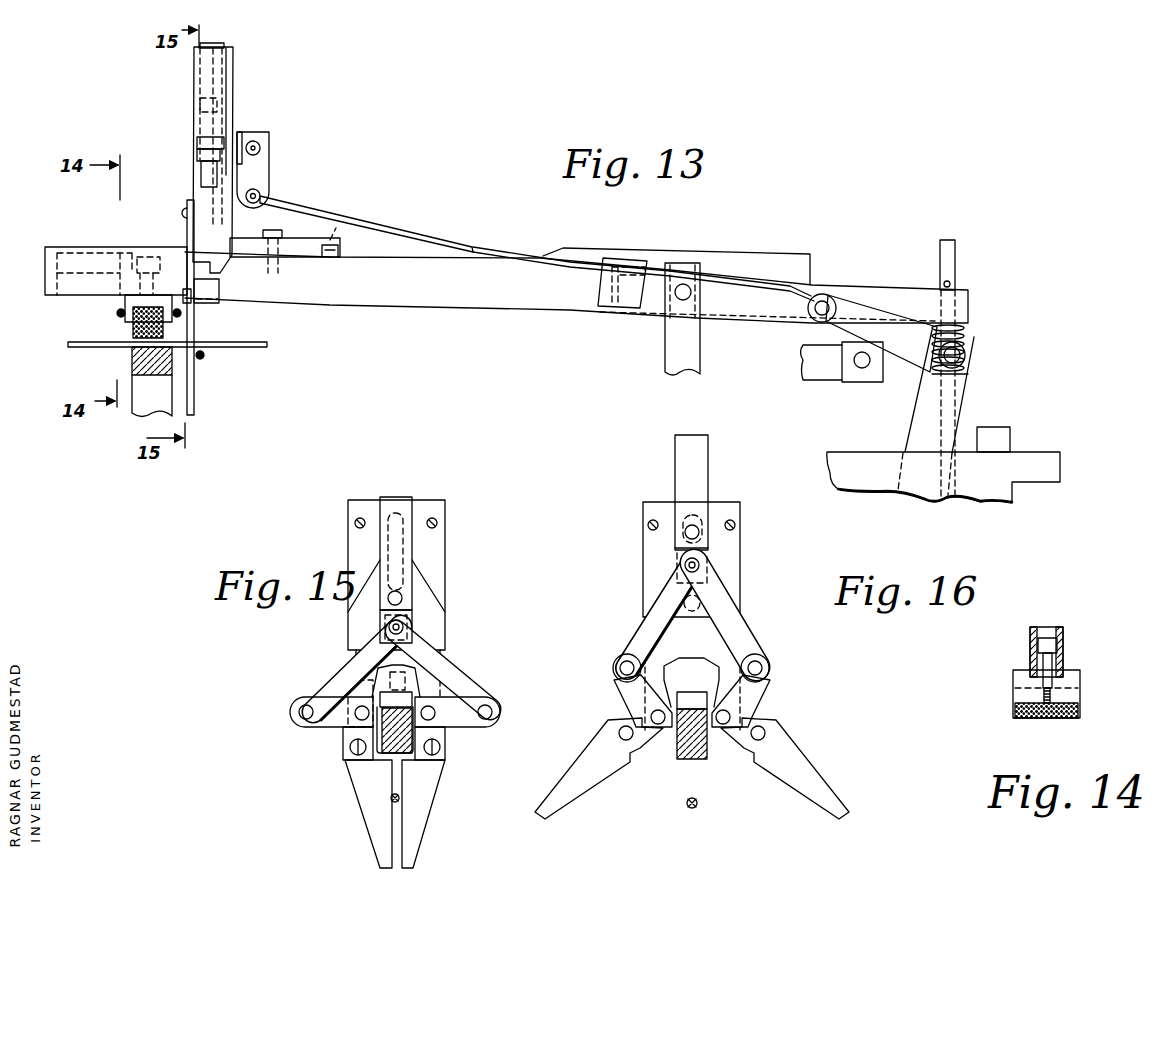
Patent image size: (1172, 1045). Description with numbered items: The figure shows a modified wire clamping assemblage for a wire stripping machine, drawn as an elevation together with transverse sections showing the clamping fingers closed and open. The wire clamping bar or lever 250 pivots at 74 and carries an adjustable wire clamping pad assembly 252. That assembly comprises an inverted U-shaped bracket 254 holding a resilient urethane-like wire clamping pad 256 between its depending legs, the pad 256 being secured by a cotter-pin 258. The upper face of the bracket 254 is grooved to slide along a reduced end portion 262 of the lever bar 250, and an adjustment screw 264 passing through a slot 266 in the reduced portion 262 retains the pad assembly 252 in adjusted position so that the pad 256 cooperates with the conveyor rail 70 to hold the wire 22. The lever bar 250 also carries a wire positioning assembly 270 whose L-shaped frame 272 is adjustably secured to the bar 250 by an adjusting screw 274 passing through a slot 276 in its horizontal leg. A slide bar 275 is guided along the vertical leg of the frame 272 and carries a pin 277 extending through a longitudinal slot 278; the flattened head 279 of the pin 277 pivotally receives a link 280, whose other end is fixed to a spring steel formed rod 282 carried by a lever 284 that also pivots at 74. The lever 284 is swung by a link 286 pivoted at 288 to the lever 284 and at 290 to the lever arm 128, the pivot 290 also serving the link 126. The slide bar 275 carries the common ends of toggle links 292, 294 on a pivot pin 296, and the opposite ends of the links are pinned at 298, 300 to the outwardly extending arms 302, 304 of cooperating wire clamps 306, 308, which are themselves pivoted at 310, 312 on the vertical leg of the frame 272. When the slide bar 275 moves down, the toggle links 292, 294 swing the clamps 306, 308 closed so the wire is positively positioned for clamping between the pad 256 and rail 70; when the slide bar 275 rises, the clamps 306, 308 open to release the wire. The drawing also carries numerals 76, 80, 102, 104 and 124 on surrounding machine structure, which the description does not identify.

In FIG. 13, the wire 22 is at (68, 345).
In FIG. 15, the wire 22 is at (393, 803).
In FIG. 16, the wire 22 is at (696, 807).
In FIG. 13, the conveyor rail 70 is at (135, 362).
In FIG. 13, the pivot 74 is at (683, 284).
In FIG. 13, the post 76 is at (700, 358).
In FIG. 13, the upright post 80 is at (955, 257).
In FIG. 13, the base 102 is at (1035, 466).
In FIG. 13, the base block 104 is at (1000, 440).
In FIG. 13, the block 124 is at (825, 370).
In FIG. 13, the link 126 is at (855, 380).
In FIG. 13, the lever arm 128 is at (933, 415).
In FIG. 13, the wire clamping bar or lever 250 is at (513, 309).
In FIG. 15, the wire clamping bar or lever 250 is at (407, 762).
In FIG. 16, the wire clamping bar or lever 250 is at (695, 756).
In FIG. 14, the wire clamping bar or lever 250 is at (1056, 665).
In FIG. 13, the adjustable wire clamping pad assembly 252 is at (122, 325).
In FIG. 13, the inverted U-shaped bracket 254 is at (125, 308).
In FIG. 14, the inverted U-shaped bracket 254 is at (1075, 693).
In FIG. 13, the resilient wire clamping pad 256 is at (137, 330).
In FIG. 14, the resilient wire clamping pad 256 is at (1015, 710).
In FIG. 13, the cotter-pin 258 is at (181, 315).
In FIG. 14, the cotter-pin 258 is at (1043, 695).
In FIG. 13, the reduced end portion 262 is at (97, 262).
In FIG. 13, the adjustment screw 264 is at (135, 248).
In FIG. 14, the adjustment screw 264 is at (1038, 647).
In FIG. 13, the slot 266 is at (74, 250).
In FIG. 14, the slot 266 is at (1064, 666).
In FIG. 13, the wire positioning assembly 270 is at (258, 112).
In FIG. 15, the wire positioning assembly 270 is at (452, 536).
In FIG. 13, the L-shaped frame 272 is at (228, 125).
In FIG. 15, the L-shaped frame 272 is at (436, 567).
In FIG. 16, the L-shaped frame 272 is at (746, 560).
In FIG. 13, the adjusting screw 274 is at (282, 229).
In FIG. 13, the slide bar 275 is at (229, 47).
In FIG. 15, the slide bar 275 is at (403, 505).
In FIG. 16, the slide bar 275 is at (708, 455).
In FIG. 13, the slot 276 is at (362, 214).
In FIG. 13, the pin 277 is at (197, 150).
In FIG. 15, the pin 277 is at (400, 602).
In FIG. 16, the pin 277 is at (699, 530).
In FIG. 13, the longitudinal slot 278 is at (232, 108).
In FIG. 13, the flattened head 279 is at (262, 150).
In FIG. 13, the link 280 is at (265, 175).
In FIG. 13, the spring steel formed rod 282 is at (430, 228).
In FIG. 13, the lever 284 is at (737, 288).
In FIG. 13, the link 286 is at (890, 342).
In FIG. 13, the pivot 288 is at (822, 301).
In FIG. 13, the pivot 290 is at (966, 352).
In FIG. 13, the toggle link 292 is at (213, 218).
In FIG. 15, the toggle link 292 is at (420, 653).
In FIG. 16, the toggle link 292 is at (728, 628).
In FIG. 15, the toggle link 294 is at (333, 680).
In FIG. 16, the toggle link 294 is at (636, 631).
In FIG. 13, the pivot pin 296 is at (201, 173).
In FIG. 15, the pivot pin 296 is at (405, 628).
In FIG. 16, the pivot pin 296 is at (700, 572).
In FIG. 15, the pin 298 is at (493, 712).
In FIG. 16, the pin 298 is at (763, 668).
In FIG. 15, the pin 300 is at (298, 712).
In FIG. 16, the pin 300 is at (620, 668).
In FIG. 13, the outwardly extending arm 302 is at (217, 286).
In FIG. 15, the outwardly extending arm 302 is at (460, 727).
In FIG. 16, the outwardly extending arm 302 is at (757, 697).
In FIG. 15, the outwardly extending arm 304 is at (332, 718).
In FIG. 16, the outwardly extending arm 304 is at (630, 697).
In FIG. 13, the wire clamp 306 is at (194, 380).
In FIG. 15, the wire clamp 306 is at (427, 800).
In FIG. 16, the wire clamp 306 is at (806, 788).
In FIG. 15, the wire clamp 308 is at (365, 810).
In FIG. 16, the wire clamp 308 is at (577, 793).
In FIG. 15, the pivot 310 is at (432, 710).
In FIG. 16, the pivot 310 is at (723, 725).
In FIG. 15, the pivot 312 is at (360, 713).
In FIG. 16, the pivot 312 is at (657, 724).